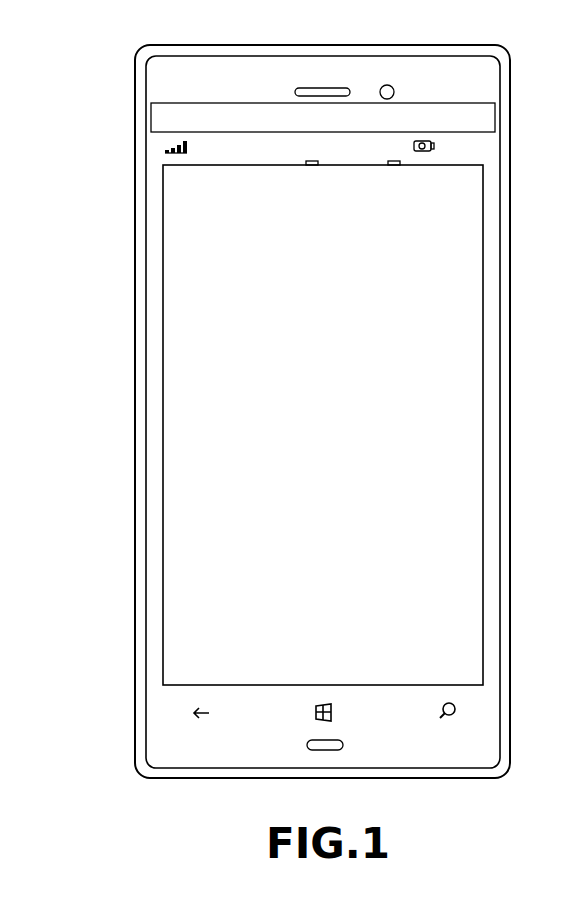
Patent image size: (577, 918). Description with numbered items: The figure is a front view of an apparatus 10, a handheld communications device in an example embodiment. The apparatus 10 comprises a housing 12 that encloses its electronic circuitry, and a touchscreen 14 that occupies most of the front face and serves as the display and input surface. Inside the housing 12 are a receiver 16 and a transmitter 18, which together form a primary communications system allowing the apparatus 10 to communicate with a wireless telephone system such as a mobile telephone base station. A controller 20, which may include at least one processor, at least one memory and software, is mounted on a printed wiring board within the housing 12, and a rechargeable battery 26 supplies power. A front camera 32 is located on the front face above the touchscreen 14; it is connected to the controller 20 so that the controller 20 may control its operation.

The apparatus 10 is at (267, 393).
The housing 12 is at (136, 348).
The touchscreen 14 is at (200, 478).
The receiver 16 is at (135, 528).
The transmitter 18 is at (135, 563).
The controller 20 is at (135, 598).
The rechargeable battery 26 is at (135, 660).
The front camera 32 is at (388, 89).